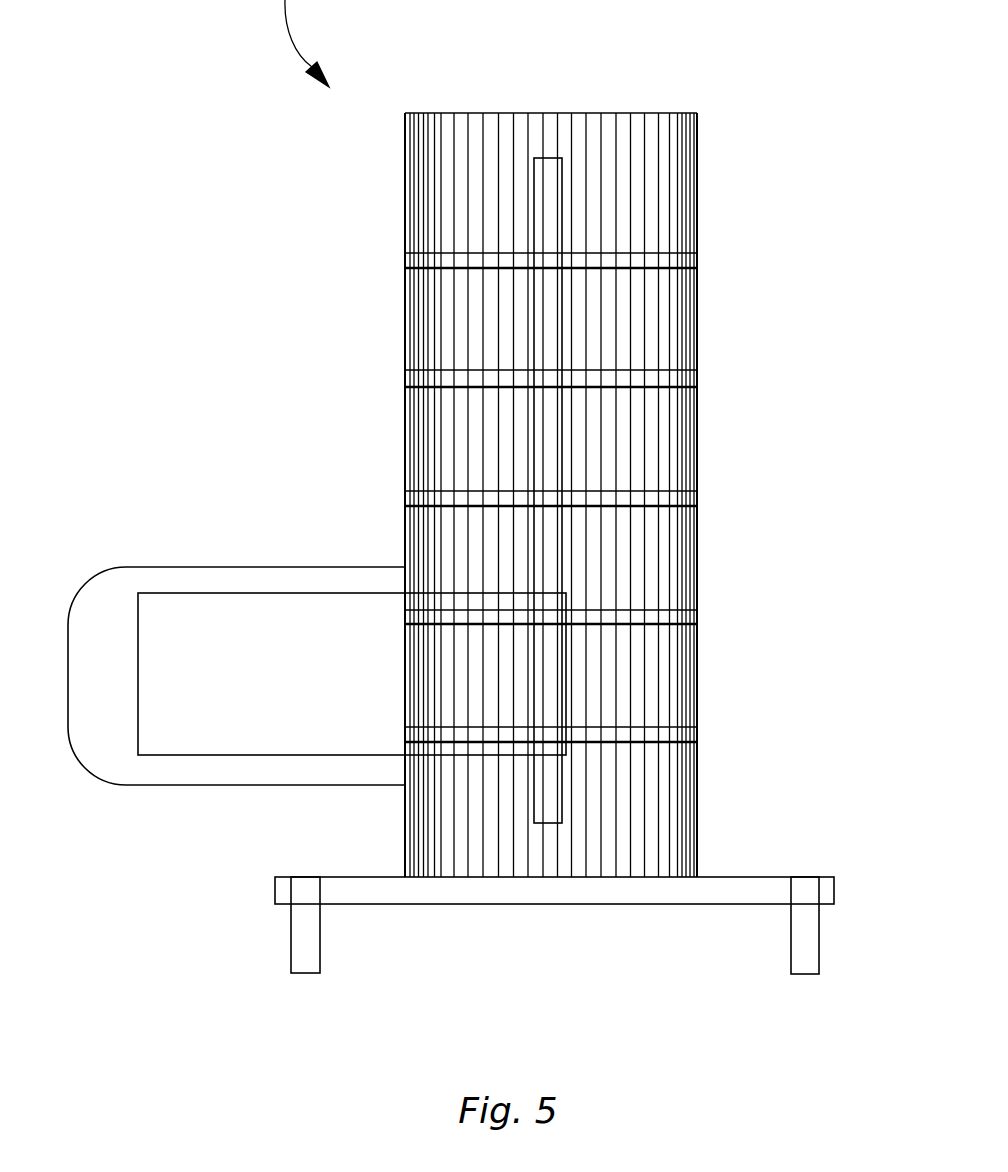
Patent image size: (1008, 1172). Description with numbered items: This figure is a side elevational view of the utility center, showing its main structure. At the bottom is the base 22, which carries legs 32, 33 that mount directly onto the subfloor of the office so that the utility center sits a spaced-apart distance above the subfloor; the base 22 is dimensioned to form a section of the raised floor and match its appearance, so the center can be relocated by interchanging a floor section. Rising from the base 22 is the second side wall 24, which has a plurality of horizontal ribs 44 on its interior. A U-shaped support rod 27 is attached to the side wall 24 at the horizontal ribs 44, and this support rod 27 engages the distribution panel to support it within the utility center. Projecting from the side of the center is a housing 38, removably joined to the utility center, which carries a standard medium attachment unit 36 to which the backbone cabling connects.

The base 22 is at (730, 891).
The second side wall 24 is at (673, 141).
The U-shaped support rod 27 is at (549, 168).
The leg 32 is at (308, 936).
The leg 33 is at (806, 933).
The medium attachment unit 36 is at (244, 695).
The housing 38 is at (87, 640).
The horizontal ribs 44 is at (408, 260).